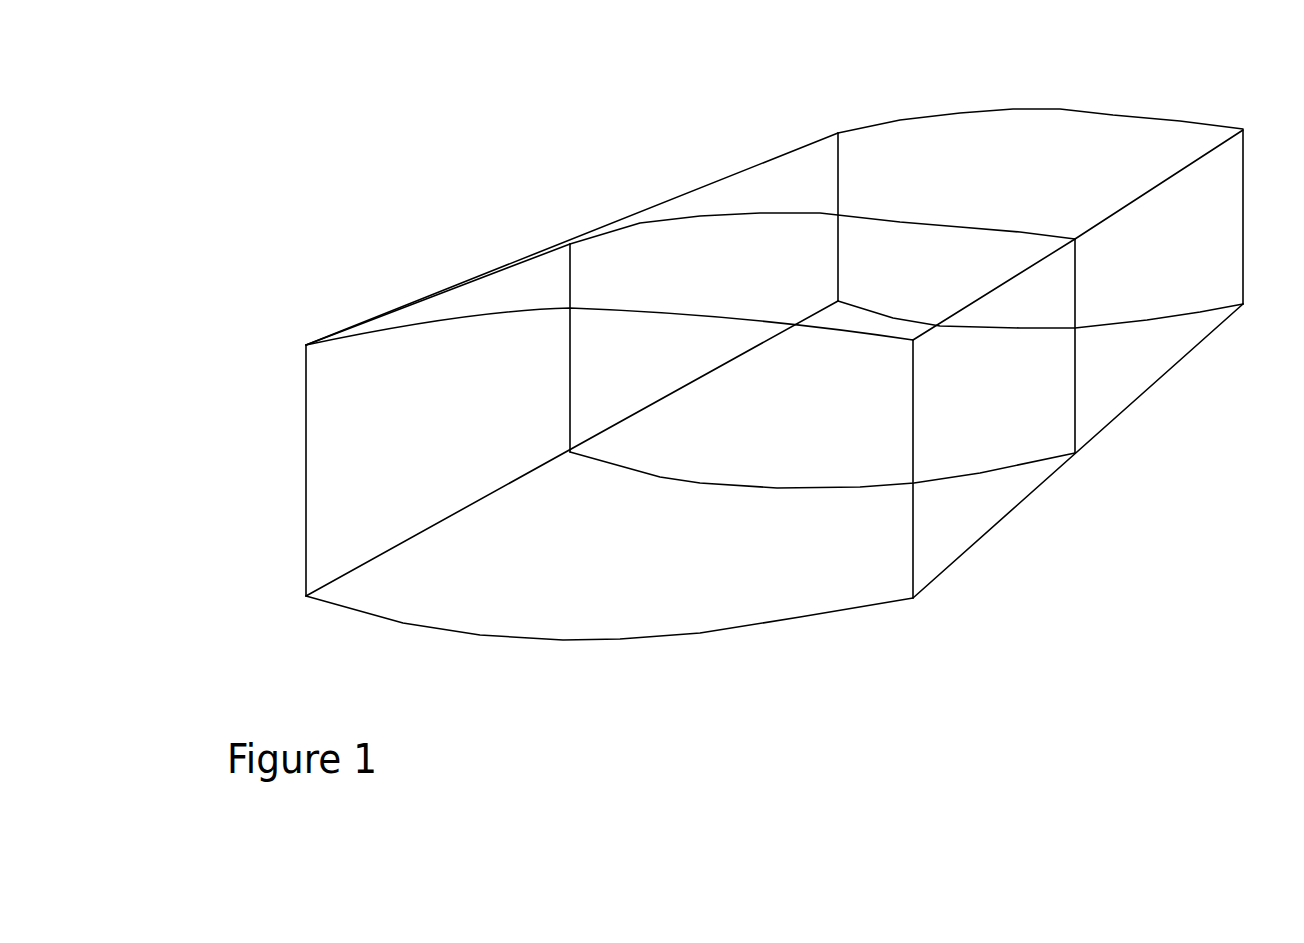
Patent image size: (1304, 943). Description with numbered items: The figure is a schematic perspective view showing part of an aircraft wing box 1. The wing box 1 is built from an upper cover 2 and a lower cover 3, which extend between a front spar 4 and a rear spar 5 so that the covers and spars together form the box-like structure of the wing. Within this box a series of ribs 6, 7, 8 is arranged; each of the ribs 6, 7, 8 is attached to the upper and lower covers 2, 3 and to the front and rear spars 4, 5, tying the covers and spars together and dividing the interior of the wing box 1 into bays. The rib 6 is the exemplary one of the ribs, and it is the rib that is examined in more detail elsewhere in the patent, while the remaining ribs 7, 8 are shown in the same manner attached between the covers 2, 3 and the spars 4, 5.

The aircraft wing box 1 is at (409, 182).
The upper cover 2 is at (681, 264).
The lower cover 3 is at (748, 628).
The front spar 4 is at (997, 394).
The rear spar 5 is at (357, 471).
The rib 6 is at (620, 598).
The rib 7 is at (747, 440).
The rib 8 is at (1003, 170).